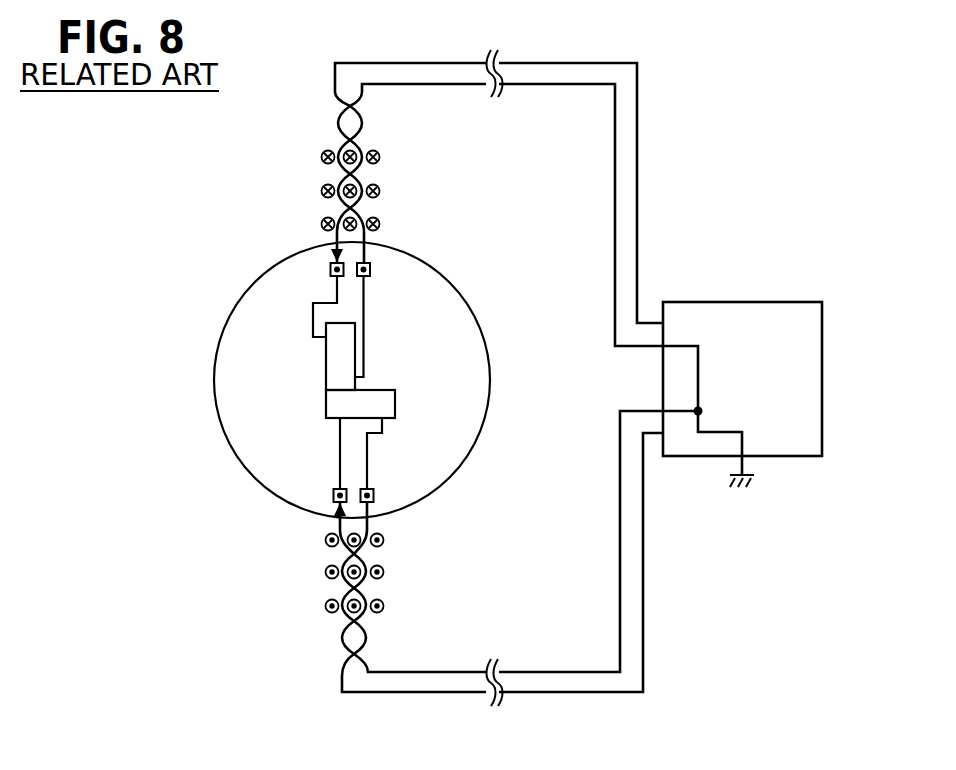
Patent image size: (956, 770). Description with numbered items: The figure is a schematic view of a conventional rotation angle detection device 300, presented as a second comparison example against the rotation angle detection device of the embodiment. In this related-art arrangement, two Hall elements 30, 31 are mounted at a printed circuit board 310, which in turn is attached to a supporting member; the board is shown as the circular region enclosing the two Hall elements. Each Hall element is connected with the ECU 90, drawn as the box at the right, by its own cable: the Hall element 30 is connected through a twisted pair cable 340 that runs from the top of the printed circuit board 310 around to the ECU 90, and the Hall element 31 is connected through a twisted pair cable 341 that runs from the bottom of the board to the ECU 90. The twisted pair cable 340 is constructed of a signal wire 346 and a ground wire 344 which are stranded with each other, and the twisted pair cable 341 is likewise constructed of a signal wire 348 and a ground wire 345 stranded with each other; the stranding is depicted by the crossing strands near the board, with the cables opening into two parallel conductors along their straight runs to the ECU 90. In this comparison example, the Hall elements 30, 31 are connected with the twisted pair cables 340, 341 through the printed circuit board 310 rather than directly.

The rotation angle detection device 300 is at (760, 90).
The printed circuit board 310 is at (243, 320).
The Hall element 30 is at (326, 366).
The Hall element 31 is at (382, 400).
The ECU 90 is at (712, 301).
The twisted pair cable 340 is at (451, 93).
The twisted pair cable 341 is at (614, 540).
The ground wire 344 is at (372, 90).
The signal wire 346 is at (335, 75).
The ground wire 345 is at (380, 672).
The signal wire 348 is at (341, 683).